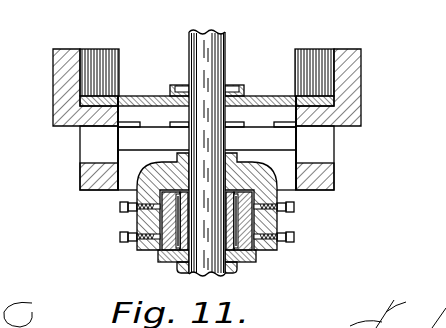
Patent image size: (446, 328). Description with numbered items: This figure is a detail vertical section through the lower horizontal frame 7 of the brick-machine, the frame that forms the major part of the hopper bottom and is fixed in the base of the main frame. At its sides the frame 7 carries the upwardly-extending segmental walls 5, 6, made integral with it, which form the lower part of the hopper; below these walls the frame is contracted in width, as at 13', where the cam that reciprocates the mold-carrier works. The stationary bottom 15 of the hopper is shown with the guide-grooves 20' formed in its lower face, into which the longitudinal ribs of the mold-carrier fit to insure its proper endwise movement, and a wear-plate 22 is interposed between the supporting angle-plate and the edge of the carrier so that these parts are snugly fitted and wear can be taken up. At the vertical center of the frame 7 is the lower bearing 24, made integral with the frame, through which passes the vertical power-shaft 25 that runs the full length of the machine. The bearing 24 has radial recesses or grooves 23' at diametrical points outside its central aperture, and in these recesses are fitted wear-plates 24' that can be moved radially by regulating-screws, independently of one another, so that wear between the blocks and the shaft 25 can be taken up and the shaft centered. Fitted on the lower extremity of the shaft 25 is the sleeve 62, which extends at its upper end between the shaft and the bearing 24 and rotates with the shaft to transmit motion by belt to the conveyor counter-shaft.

The upwardly-extending wall 5 is at (96, 53).
The upwardly-extending wall 6 is at (331, 53).
The horizontal stationary frame 7 is at (345, 143).
The contracted portion of the frame 13' is at (206, 143).
The stationary bottom of the hopper 15 is at (255, 97).
The guide-grooves 20' is at (207, 130).
The wear-plate 22 is at (128, 127).
The radial recesses or grooves 23' is at (264, 230).
The lower bearing 24 is at (195, 222).
The wear-plates 24' is at (157, 236).
The vertical power-shaft 25 is at (213, 31).
The sleeve 62 is at (238, 266).